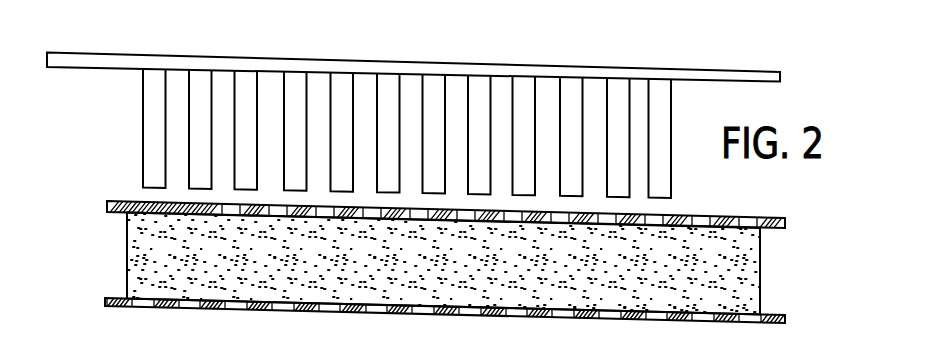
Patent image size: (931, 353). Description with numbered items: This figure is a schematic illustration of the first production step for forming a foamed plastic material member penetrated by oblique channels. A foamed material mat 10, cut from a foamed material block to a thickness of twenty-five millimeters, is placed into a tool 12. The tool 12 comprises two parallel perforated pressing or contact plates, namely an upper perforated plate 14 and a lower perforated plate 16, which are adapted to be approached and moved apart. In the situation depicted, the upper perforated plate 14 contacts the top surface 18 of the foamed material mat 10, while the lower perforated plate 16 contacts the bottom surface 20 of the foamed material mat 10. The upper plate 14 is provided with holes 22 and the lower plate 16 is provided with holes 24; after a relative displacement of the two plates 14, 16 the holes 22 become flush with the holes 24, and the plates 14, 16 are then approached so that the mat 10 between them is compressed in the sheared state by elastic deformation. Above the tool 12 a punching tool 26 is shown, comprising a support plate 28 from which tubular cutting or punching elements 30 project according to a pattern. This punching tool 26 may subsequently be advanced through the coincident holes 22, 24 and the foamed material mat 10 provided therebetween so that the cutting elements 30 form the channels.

The foamed material mat 10 is at (126, 244).
The tool 12 is at (94, 219).
The upper perforated plate 14 is at (118, 201).
The lower perforated plate 16 is at (106, 299).
The top surface 18 is at (175, 216).
The bottom surface 20 is at (180, 305).
The holes in the upper plate 22 is at (697, 218).
The holes in the lower plate 24 is at (567, 319).
The punching tool 26 is at (684, 102).
The support plate 28 is at (361, 66).
The tubular cutting or punching elements 30 is at (568, 102).